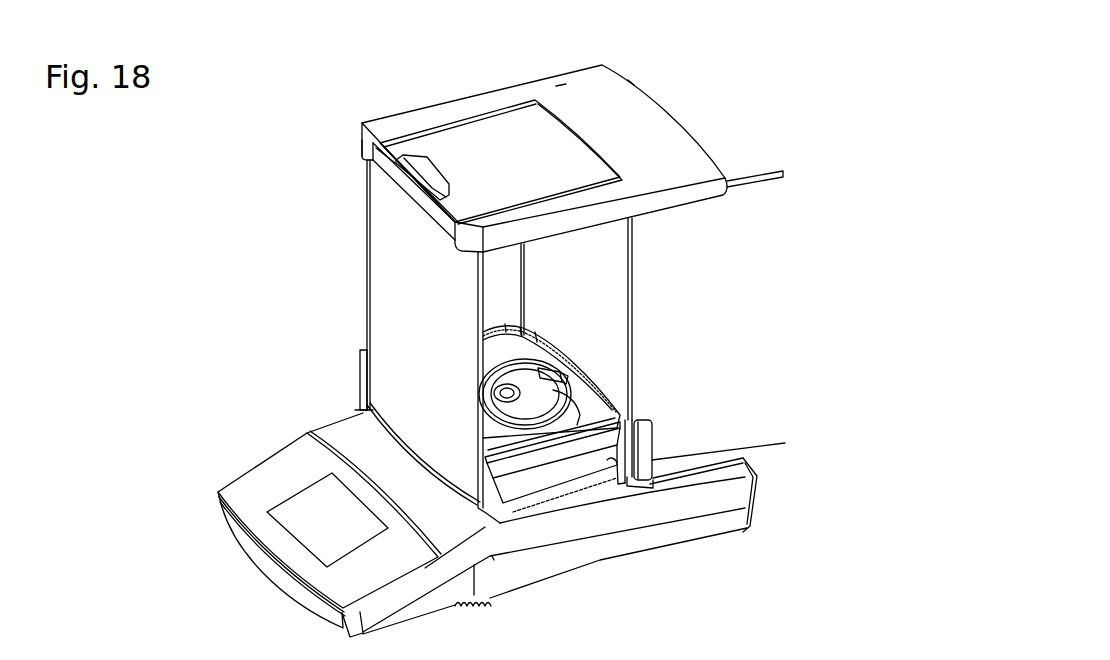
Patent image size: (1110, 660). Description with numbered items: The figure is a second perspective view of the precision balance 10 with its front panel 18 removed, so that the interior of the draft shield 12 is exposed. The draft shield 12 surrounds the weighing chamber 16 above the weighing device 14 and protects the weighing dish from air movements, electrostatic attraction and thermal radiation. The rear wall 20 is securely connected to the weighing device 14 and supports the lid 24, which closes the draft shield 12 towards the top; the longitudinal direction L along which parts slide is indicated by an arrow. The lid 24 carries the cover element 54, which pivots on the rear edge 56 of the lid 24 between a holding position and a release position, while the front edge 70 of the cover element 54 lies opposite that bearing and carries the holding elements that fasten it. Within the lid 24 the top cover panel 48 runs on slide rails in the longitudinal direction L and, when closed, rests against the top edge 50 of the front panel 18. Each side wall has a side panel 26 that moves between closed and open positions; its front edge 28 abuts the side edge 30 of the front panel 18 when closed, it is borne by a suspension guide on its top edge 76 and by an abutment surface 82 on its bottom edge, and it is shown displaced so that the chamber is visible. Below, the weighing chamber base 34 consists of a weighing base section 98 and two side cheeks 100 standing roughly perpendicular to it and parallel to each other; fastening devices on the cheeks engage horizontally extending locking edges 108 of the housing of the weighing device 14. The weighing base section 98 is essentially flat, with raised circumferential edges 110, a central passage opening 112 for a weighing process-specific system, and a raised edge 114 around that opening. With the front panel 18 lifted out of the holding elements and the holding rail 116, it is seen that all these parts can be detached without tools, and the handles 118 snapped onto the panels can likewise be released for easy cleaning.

The precision balance 10 is at (775, 62).
The draft shield 12 is at (236, 297).
The weighing device 14 is at (258, 477).
The weighing chamber 16 is at (514, 280).
The front panel 18 is at (390, 335).
The rear wall 20 is at (742, 172).
The lid 24 is at (472, 102).
The side panel 26 is at (732, 305).
The front edge of the side panel 28 is at (628, 405).
The side edge of the front panel 30 is at (485, 485).
The weighing chamber base 34 is at (585, 480).
The top cover panel 48 is at (407, 123).
The top edge of the front panel 50 is at (393, 163).
The cover element 54 is at (553, 88).
The rear edge of the lid 56 is at (625, 80).
The front edge of the cover element 70 is at (368, 145).
The top edge of the side panel 76 is at (765, 178).
The abutment surface 82 is at (598, 437).
The weighing base section 98 is at (593, 405).
The side cheek 100 is at (548, 493).
The locking edge 108 is at (578, 535).
The circumferential edge 110 is at (614, 400).
The passage opening 112 is at (502, 393).
The raised edge 114 is at (537, 358).
The holding rail 116 is at (363, 418).
The handle 118 is at (428, 175).